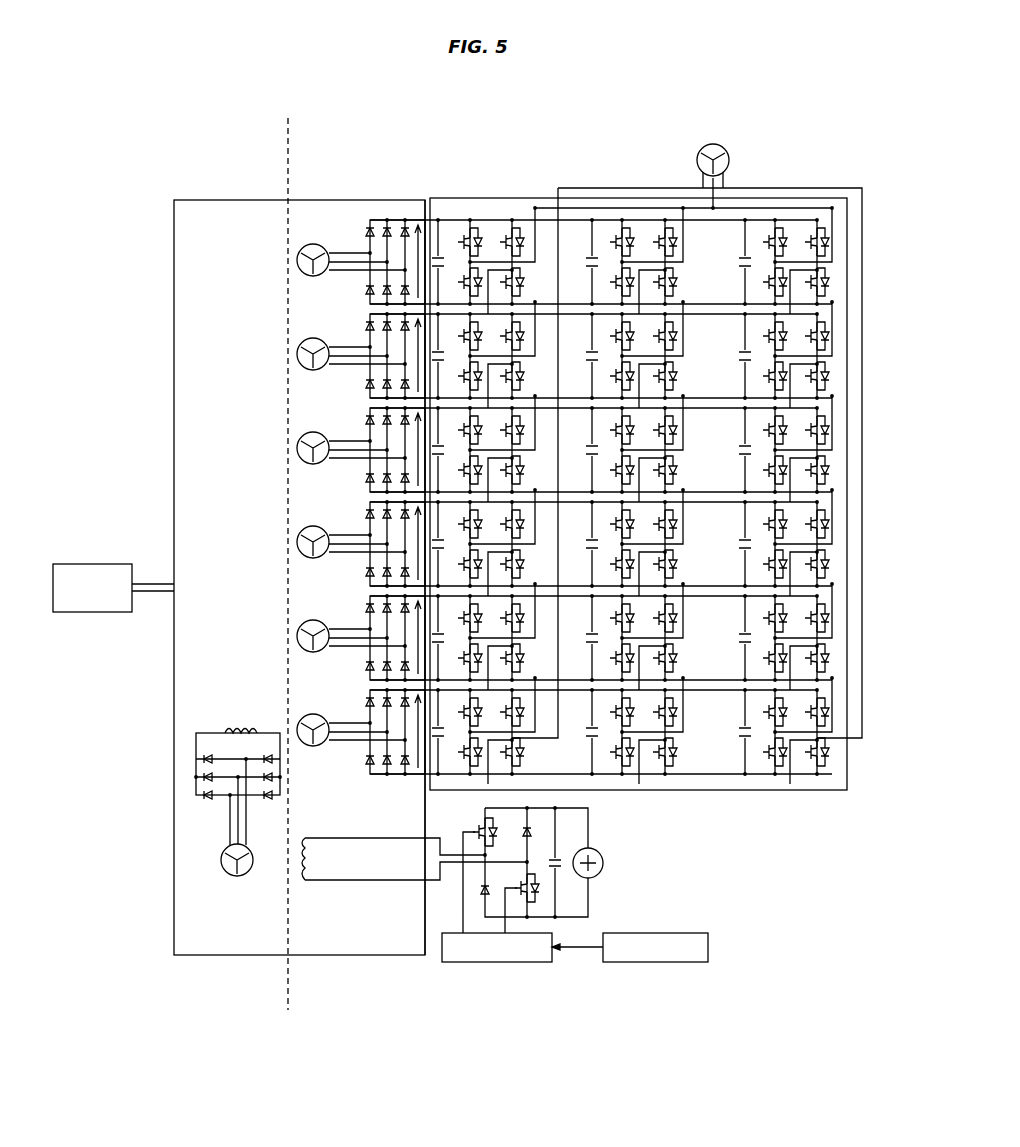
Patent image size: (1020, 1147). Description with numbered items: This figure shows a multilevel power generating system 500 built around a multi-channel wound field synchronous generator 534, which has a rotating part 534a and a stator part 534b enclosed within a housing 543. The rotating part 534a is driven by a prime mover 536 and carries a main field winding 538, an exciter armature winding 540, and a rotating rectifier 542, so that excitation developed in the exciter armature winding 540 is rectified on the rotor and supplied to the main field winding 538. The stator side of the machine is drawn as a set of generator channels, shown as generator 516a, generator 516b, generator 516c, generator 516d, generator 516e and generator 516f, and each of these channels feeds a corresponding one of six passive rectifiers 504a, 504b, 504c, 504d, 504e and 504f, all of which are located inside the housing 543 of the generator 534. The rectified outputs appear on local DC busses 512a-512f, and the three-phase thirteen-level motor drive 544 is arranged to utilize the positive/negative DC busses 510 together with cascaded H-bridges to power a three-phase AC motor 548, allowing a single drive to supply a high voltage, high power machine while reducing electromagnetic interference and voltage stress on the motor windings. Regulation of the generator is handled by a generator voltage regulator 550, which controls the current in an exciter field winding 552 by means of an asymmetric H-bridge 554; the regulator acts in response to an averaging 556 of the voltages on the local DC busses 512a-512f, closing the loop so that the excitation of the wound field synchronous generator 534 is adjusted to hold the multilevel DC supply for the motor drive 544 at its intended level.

The power generating system 500 is at (643, 98).
The wound field synchronous generator 534 is at (177, 137).
The rotating part 534a is at (177, 190).
The stator part 534b is at (290, 190).
The housing 543 is at (175, 333).
The prime mover 536 is at (113, 588).
The 3-phase 13-level motor drive 544 is at (477, 198).
The 3-phase AC motor 548 is at (720, 156).
The generator 516a is at (297, 260).
The generator 516b is at (297, 354).
The generator 516c is at (297, 448).
The generator 516d is at (297, 542).
The generator 516e is at (297, 636).
The generator 516f is at (297, 730).
The passive rectifier 504a is at (385, 250).
The passive rectifier 504b is at (385, 344).
The passive rectifier 504c is at (385, 438).
The passive rectifier 504d is at (385, 532).
The passive rectifier 504e is at (385, 626).
The passive rectifier 504f is at (385, 720).
The positive/negative DC busses 510 is at (548, 222).
The rotating rectifier 542 is at (196, 748).
The main field winding 538 is at (231, 733).
The exciter armature winding 540 is at (249, 870).
The local DC busses 512a-512f is at (418, 782).
The exciter field winding 552 is at (306, 880).
The asymmetric H-bridge 554 is at (606, 824).
The averaging 556 is at (604, 862).
The generator voltage regulator 550 is at (522, 947).